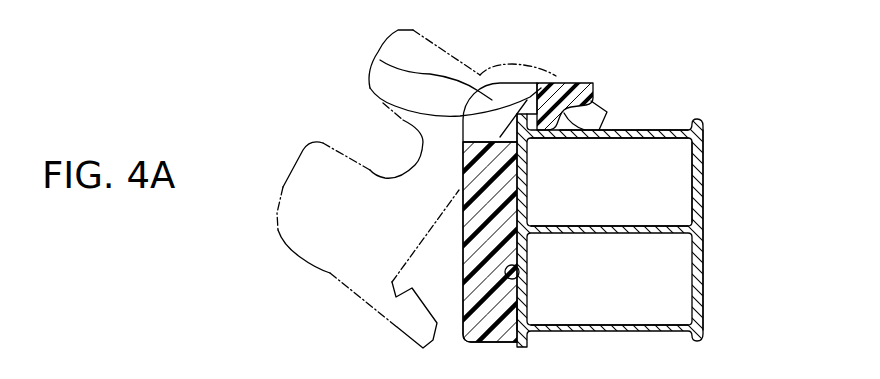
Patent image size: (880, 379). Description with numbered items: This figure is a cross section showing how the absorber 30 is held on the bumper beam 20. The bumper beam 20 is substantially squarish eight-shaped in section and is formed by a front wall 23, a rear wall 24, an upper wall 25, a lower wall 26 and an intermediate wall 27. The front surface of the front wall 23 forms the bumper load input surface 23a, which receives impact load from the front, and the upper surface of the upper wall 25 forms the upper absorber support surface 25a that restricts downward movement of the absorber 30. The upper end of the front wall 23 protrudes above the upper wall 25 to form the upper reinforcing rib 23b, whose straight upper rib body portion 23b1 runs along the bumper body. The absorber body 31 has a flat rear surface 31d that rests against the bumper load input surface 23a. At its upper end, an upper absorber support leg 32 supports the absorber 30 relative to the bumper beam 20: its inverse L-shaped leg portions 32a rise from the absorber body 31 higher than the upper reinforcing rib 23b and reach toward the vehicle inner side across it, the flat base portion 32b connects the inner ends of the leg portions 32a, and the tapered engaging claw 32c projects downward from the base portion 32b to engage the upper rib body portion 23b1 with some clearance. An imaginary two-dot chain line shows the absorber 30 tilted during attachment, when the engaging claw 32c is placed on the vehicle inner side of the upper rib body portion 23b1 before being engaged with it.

The bumper beam 20 is at (648, 226).
The front wall 23 is at (532, 220).
The bumper load input surface 23a is at (519, 276).
The upper reinforcing rib 23b is at (380, 100).
The upper rib body portion 23b1 is at (353, 218).
The rear wall 24 is at (705, 183).
The upper wall 25 is at (603, 139).
The upper absorber support surface 25a is at (628, 130).
The lower wall 26 is at (607, 325).
The intermediate wall 27 is at (610, 227).
The absorber 30 is at (462, 232).
The absorber body 31 is at (461, 270).
The rear surface 31d is at (528, 305).
The upper absorber support leg 32 is at (504, 74).
The leg portion 32a is at (386, 57).
The base portion 32b is at (568, 82).
The engaging claw 32c is at (595, 106).